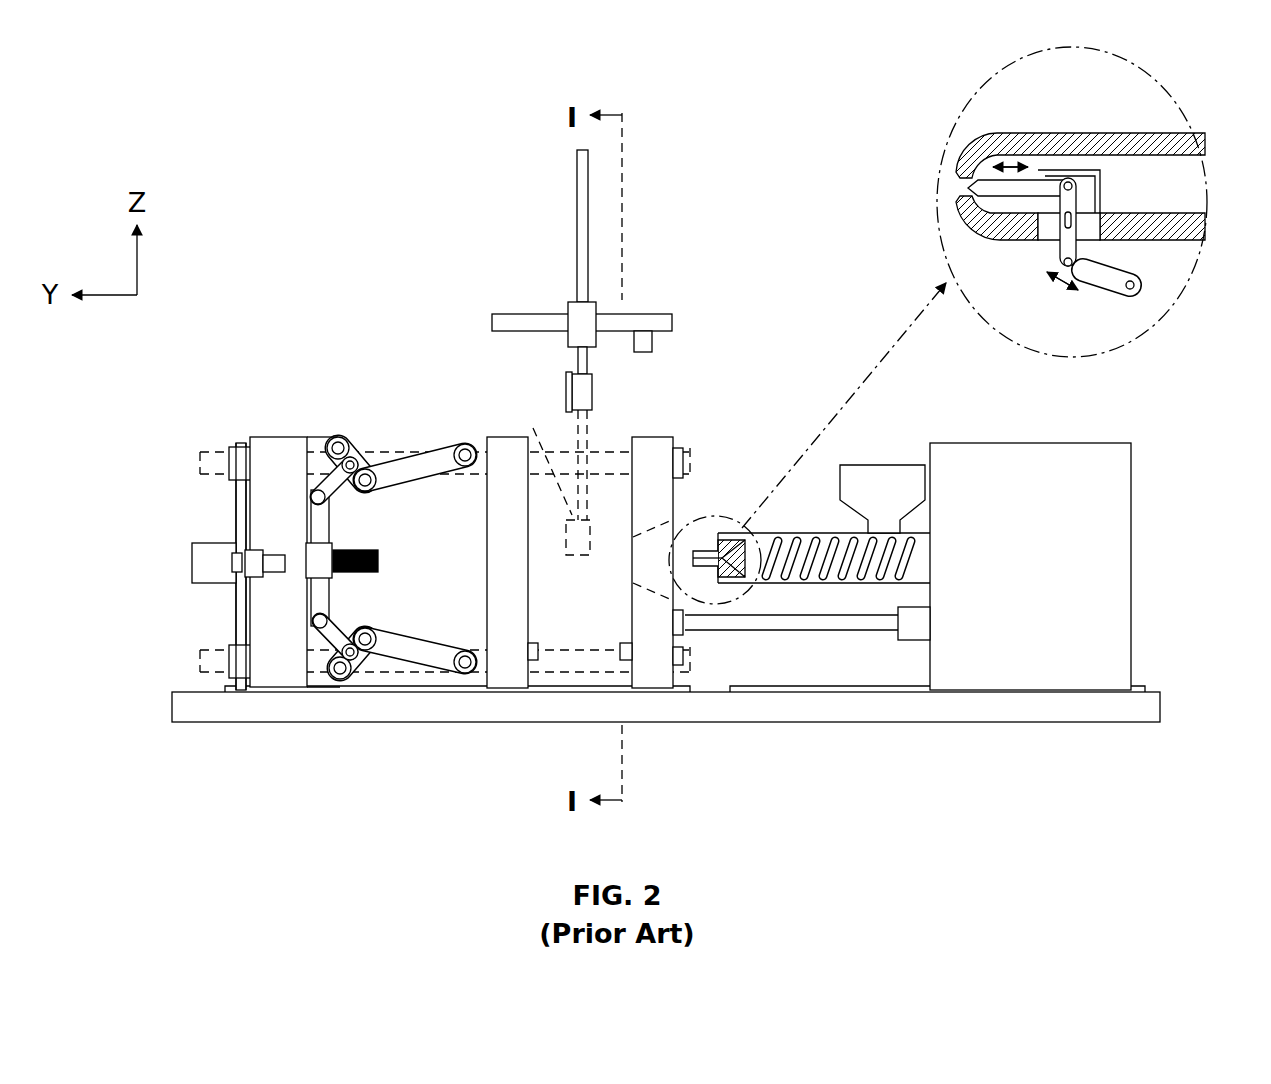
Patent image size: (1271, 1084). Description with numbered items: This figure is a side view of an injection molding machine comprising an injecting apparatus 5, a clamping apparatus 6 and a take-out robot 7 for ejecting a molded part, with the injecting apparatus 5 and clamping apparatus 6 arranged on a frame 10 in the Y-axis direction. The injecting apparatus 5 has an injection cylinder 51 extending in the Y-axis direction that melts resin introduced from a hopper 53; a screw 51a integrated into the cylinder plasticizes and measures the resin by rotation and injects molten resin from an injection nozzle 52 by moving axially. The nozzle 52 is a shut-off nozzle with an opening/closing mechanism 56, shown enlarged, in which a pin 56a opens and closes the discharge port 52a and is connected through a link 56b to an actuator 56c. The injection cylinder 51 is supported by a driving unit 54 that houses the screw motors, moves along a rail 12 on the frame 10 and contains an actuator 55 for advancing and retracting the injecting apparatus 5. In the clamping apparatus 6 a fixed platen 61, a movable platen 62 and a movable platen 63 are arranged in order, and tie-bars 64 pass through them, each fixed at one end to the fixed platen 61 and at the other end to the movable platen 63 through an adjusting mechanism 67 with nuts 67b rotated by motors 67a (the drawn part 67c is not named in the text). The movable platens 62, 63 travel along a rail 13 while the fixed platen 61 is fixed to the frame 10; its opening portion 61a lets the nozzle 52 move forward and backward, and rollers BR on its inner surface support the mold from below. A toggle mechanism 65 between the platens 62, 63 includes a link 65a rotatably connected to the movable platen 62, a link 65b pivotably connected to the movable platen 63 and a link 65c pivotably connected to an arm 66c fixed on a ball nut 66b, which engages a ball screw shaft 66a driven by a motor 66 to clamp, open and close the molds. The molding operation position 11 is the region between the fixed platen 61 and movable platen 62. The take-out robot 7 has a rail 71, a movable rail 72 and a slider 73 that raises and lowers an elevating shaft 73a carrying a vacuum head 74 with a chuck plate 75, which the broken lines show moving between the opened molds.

The injecting apparatus 5 is at (944, 486).
The clamping apparatus 6 is at (425, 385).
The take-out robot 7 is at (605, 352).
The frame 10 is at (1010, 722).
The molding operation position 11 is at (596, 500).
The rail 12 is at (760, 692).
The rail 13 is at (330, 688).
The injection cylinder 51 is at (807, 571).
The screw 51a is at (770, 580).
The injection nozzle 52 is at (705, 545).
The discharge port 52a is at (968, 183).
The hopper 53 is at (882, 465).
The driving unit 54 is at (1131, 568).
The actuator 55 is at (898, 632).
The opening/closing mechanism 56 is at (1057, 202).
The pin 56a is at (1025, 196).
The link 56b is at (1078, 215).
The actuator 56c is at (1090, 280).
The fixed platen 61 is at (628, 602).
The opening portion 61a is at (650, 585).
The movable platen 62 is at (508, 688).
The movable platen 63 is at (282, 688).
The tie-bars 64 is at (200, 470).
The toggle mechanism 65 is at (382, 566).
The link 65a is at (425, 465).
The link 65b is at (360, 448).
The link 65c is at (335, 482).
The motor 66 is at (291, 557).
The ball screw shaft 66a is at (378, 568).
The ball nut 66b is at (312, 562).
The arm 66c is at (325, 527).
The adjusting mechanism 67 is at (188, 524).
The motors 67a is at (258, 560).
The nuts 67b is at (228, 458).
The support plate body 67c is at (236, 612).
The rail 71 is at (652, 343).
The movable rail 72 is at (633, 314).
The slider 73 is at (575, 302).
The elevating shaft 73a is at (590, 195).
The vacuum head 74 is at (630, 412).
The chuck plate 75 is at (566, 395).
The rollers BR is at (622, 655).